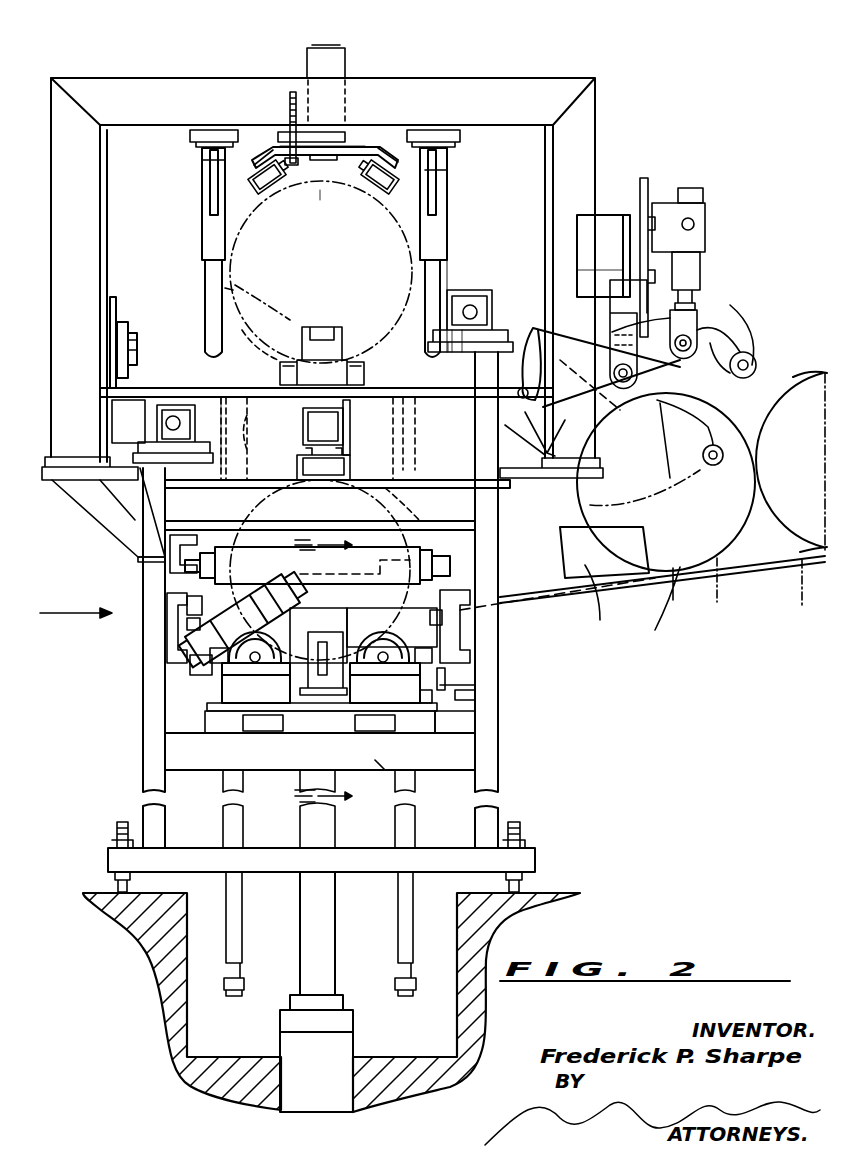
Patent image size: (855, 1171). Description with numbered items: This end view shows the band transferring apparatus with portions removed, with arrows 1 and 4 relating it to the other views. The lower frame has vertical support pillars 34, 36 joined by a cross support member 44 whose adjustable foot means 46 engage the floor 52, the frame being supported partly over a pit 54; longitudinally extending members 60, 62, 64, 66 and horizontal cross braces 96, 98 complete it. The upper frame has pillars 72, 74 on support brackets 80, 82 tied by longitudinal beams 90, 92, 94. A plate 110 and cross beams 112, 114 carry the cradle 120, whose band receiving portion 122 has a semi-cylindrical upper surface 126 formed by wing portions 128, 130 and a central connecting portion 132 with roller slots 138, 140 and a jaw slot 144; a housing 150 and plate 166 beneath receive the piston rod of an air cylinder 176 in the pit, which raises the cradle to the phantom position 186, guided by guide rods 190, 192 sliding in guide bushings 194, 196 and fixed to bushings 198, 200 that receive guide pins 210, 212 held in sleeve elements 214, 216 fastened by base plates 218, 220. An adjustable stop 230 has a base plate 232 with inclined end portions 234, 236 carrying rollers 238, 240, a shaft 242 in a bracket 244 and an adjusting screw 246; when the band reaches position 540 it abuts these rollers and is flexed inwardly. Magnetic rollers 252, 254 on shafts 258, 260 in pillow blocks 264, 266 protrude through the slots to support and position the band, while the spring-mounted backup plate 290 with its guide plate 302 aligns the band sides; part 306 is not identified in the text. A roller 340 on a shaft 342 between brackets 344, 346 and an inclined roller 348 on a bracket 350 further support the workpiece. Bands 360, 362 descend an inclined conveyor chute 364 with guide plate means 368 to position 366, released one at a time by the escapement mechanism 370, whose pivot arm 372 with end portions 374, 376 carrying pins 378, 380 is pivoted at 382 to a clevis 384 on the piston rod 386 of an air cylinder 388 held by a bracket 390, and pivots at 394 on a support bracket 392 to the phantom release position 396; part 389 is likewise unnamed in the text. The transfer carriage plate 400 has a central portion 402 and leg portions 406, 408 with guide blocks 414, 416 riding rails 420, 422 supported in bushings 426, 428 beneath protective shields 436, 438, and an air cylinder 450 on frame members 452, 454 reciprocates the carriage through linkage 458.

The web guiding apparatus 1 is at (76, 601).
The direction of web travel 4 is at (333, 671).
The vertical support pillar 34 is at (143, 700).
The vertical support pillar 36 is at (498, 750).
The cross support member 44 is at (108, 862).
The adjustable foot means 46 is at (112, 888).
The floor means 52 is at (148, 945).
The pit 54 is at (205, 1012).
The longitudinally extending member 60 is at (138, 557).
The longitudinally extending member 62 is at (170, 650).
The longitudinally extending member 64 is at (495, 582).
The longitudinally extending member 66 is at (470, 655).
The upper frame vertical pillar 72 is at (76, 210).
The upper frame vertical pillar 74 is at (580, 175).
The support bracket 80 is at (105, 505).
The support bracket 82 is at (570, 518).
The longitudinally extending beam 90 is at (210, 128).
The longitudinally extending beam 92 is at (450, 130).
The longitudinally extending beam 94 is at (350, 145).
The horizontal cross brace 96 is at (130, 522).
The horizontal cross brace 98 is at (180, 755).
The plate 110 is at (435, 720).
The cross beam 112 is at (255, 730).
The cross beam 114 is at (385, 735).
The cradle portion 120 is at (386, 685).
The band receiving and supporting portion 122 is at (340, 650).
The semi-cylindrical upper surface 126 is at (455, 598).
The wing portion 128 is at (442, 620).
The wing portion 130 is at (250, 584).
The central connecting portion 132 is at (300, 700).
The roller slot 138 is at (425, 648).
The roller slot 140 is at (322, 632).
The jaw slot 144 is at (325, 690).
The housing 150 is at (262, 685).
The plate 166 is at (340, 978).
The air cylinder 176 is at (300, 1090).
The elevated position of cradle assembly 186 is at (205, 318).
The guide rod 190 is at (268, 340).
The guide rod 192 is at (410, 440).
The guide bushing 194 is at (222, 722).
The guide bushing 196 is at (480, 725).
The bushing 198 is at (135, 385).
The bushing 200 is at (405, 252).
The guide pin 210 is at (205, 268).
The guide pin 212 is at (447, 262).
The sleeve element 214 is at (202, 168).
The sleeve element 216 is at (447, 168).
The base plate 218 is at (196, 147).
The base plate 220 is at (455, 148).
The adjustable stop or abutment means 230 is at (328, 175).
The base plate 232 is at (385, 150).
The downwardly inclined end portion 234 is at (258, 160).
The downwardly inclined end portion 236 is at (447, 175).
The roller element 238 is at (278, 198).
The roller element 240 is at (372, 200).
The shaft 242 is at (320, 135).
The bracket 244 is at (340, 62).
The adjusting screw 246 is at (293, 92).
The roller element 252 is at (282, 588).
The roller element 254 is at (475, 655).
The shaft 258 is at (222, 672).
The shaft 260 is at (426, 690).
The pillow block 264 is at (230, 665).
The pillow block 266 is at (460, 682).
The plate member 290 is at (385, 566).
The guide plate 302 is at (392, 498).
The shaft seat 306 is at (400, 612).
The roller 340 is at (235, 488).
The shaft 342 is at (438, 528).
The support bracket 344 is at (200, 580).
The support bracket 346 is at (505, 600).
The inclined roller 348 is at (200, 622).
The bracket 350 is at (200, 598).
The band 360 is at (791, 508).
The band 362 is at (734, 594).
The inclined conveyor chute 364 is at (666, 616).
The band position on cradle 366 is at (270, 500).
The guide plate means 368 is at (608, 607).
The escapement mechanism 370 is at (712, 278).
The pivot arm 372 is at (690, 372).
The end portion 374 is at (745, 332).
The end portion 376 is at (545, 435).
The cylindrical pin element 378 is at (752, 355).
The cylindrical pin element 380 is at (585, 490).
The pivotal connection 382 is at (700, 312).
The clevis member 384 is at (740, 300).
The piston rod 386 is at (700, 298).
The air cylinder 388 is at (690, 192).
The cylinder head 389 is at (695, 224).
The bracket 390 is at (618, 247).
The support bracket 392 is at (600, 263).
The pivot 394 is at (620, 372).
The release position 396 is at (712, 465).
The carriage plate 400 is at (393, 440).
The central portion 402 is at (250, 400).
The leg portion 406 is at (128, 382).
The leg portion 408 is at (540, 410).
The guide block member 414 is at (122, 415).
The guide block member 416 is at (490, 300).
The guide and support rail 420 is at (160, 425).
The guide and support rail 422 is at (476, 330).
The bushing 426 is at (135, 480).
The bushing 428 is at (483, 296).
The protective shield 436 is at (175, 405).
The protective shield 438 is at (470, 290).
The air cylinder 450 is at (340, 436).
The frame member 452 is at (355, 488).
The frame member 454 is at (407, 403).
The linkage 458 is at (270, 400).
The band position 540 is at (265, 282).